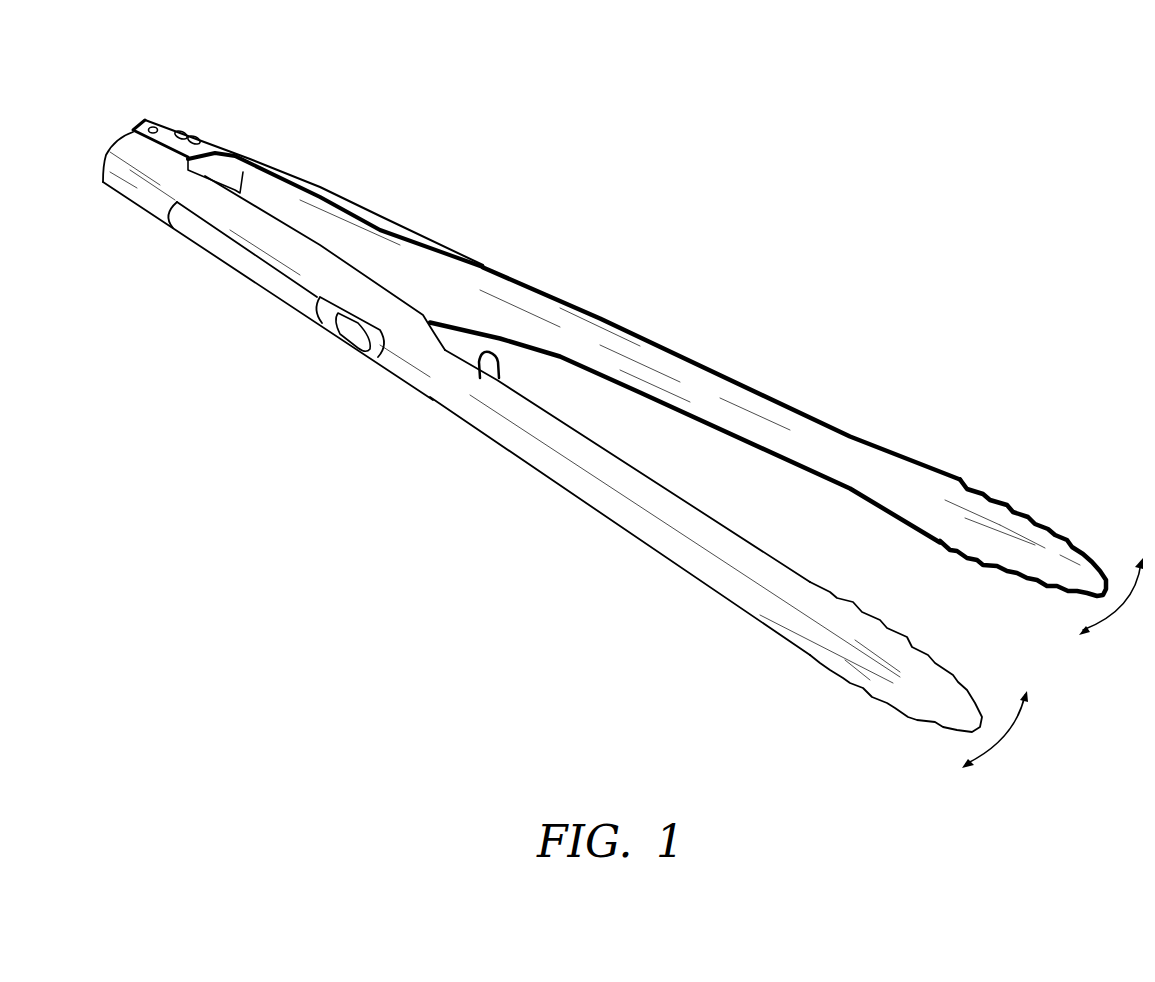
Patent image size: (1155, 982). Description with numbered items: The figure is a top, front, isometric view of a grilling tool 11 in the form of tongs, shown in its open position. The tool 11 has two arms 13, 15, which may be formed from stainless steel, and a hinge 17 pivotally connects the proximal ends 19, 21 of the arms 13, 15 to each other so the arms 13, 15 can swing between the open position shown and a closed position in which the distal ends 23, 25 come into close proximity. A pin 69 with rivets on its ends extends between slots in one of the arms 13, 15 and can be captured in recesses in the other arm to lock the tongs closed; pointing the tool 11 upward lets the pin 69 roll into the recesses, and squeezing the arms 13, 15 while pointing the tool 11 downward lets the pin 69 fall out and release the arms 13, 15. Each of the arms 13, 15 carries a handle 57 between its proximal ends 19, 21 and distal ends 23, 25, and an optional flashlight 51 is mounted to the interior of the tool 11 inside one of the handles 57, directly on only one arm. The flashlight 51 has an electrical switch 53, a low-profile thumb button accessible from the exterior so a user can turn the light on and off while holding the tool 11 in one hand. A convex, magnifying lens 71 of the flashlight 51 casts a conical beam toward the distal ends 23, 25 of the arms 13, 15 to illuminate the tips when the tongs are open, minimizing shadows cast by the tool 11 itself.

The tool 11 is at (772, 193).
The arm 13 is at (527, 453).
The arm 15 is at (683, 387).
The hinge 17 is at (151, 126).
The proximal end 19 is at (143, 193).
The proximal end 21 is at (175, 117).
The distal end 23 is at (900, 690).
The distal end 25 is at (998, 520).
The flashlight 51 is at (322, 317).
The electrical switch 53 is at (357, 337).
The handle 57 is at (223, 257).
The pin 69 is at (200, 131).
The lens 71 is at (505, 375).